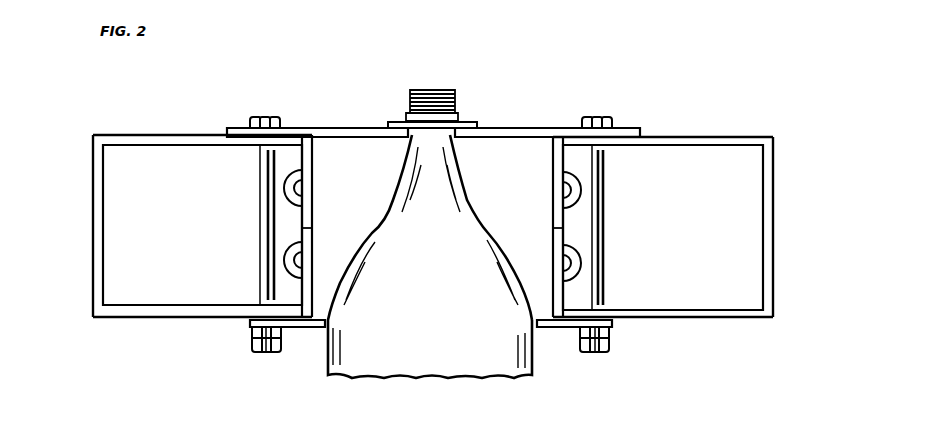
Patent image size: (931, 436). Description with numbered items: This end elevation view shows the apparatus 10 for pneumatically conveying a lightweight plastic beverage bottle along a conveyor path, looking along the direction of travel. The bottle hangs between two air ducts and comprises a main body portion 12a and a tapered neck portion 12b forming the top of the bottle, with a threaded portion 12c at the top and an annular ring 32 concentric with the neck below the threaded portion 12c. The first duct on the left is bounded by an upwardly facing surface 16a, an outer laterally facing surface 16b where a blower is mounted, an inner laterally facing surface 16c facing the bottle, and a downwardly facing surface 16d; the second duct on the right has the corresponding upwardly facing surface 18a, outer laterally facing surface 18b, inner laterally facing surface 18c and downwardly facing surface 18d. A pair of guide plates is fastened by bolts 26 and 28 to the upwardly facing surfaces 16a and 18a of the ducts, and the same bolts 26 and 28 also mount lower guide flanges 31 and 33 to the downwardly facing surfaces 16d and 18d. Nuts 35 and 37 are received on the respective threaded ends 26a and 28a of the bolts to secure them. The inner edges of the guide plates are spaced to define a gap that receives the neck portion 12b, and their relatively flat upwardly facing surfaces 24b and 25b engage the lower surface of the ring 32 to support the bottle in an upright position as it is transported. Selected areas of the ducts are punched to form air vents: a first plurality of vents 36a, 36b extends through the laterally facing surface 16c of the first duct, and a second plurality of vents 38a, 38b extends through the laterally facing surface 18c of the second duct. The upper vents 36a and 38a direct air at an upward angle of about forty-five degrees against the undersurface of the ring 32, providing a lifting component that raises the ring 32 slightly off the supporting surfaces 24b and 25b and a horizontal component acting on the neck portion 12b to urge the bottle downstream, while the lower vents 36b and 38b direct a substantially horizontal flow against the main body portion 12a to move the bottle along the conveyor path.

The apparatus 10 is at (572, 74).
The main body portion 12a is at (330, 350).
The tapered neck portion 12b is at (490, 227).
The threaded portion 12c is at (408, 95).
The upwardly facing surface 16a is at (186, 135).
The laterally facing surface 16b is at (93, 178).
The laterally facing surface 16c is at (312, 152).
The downwardly facing surface 16d is at (135, 318).
The upwardly facing surface 18a is at (692, 137).
The laterally facing surface 18b is at (773, 185).
The laterally facing surface 18c is at (553, 158).
The downwardly facing surface 18d is at (745, 318).
The upwardly facing surface 24b is at (332, 128).
The upwardly facing surface 25b is at (515, 128).
The bolt 26 is at (263, 117).
The threaded end 26a is at (265, 354).
The bolt 28 is at (598, 117).
The threaded end 28a is at (592, 355).
The lower guide flange 31 is at (300, 327).
The annular ring 32 is at (470, 122).
The lower guide flange 33 is at (553, 327).
The nut 35 is at (252, 345).
The upper air vents 36a is at (302, 188).
The lower air vents 36b is at (302, 260).
The nut 37 is at (609, 342).
The upper air vents 38a is at (563, 190).
The lower air vents 38b is at (563, 263).